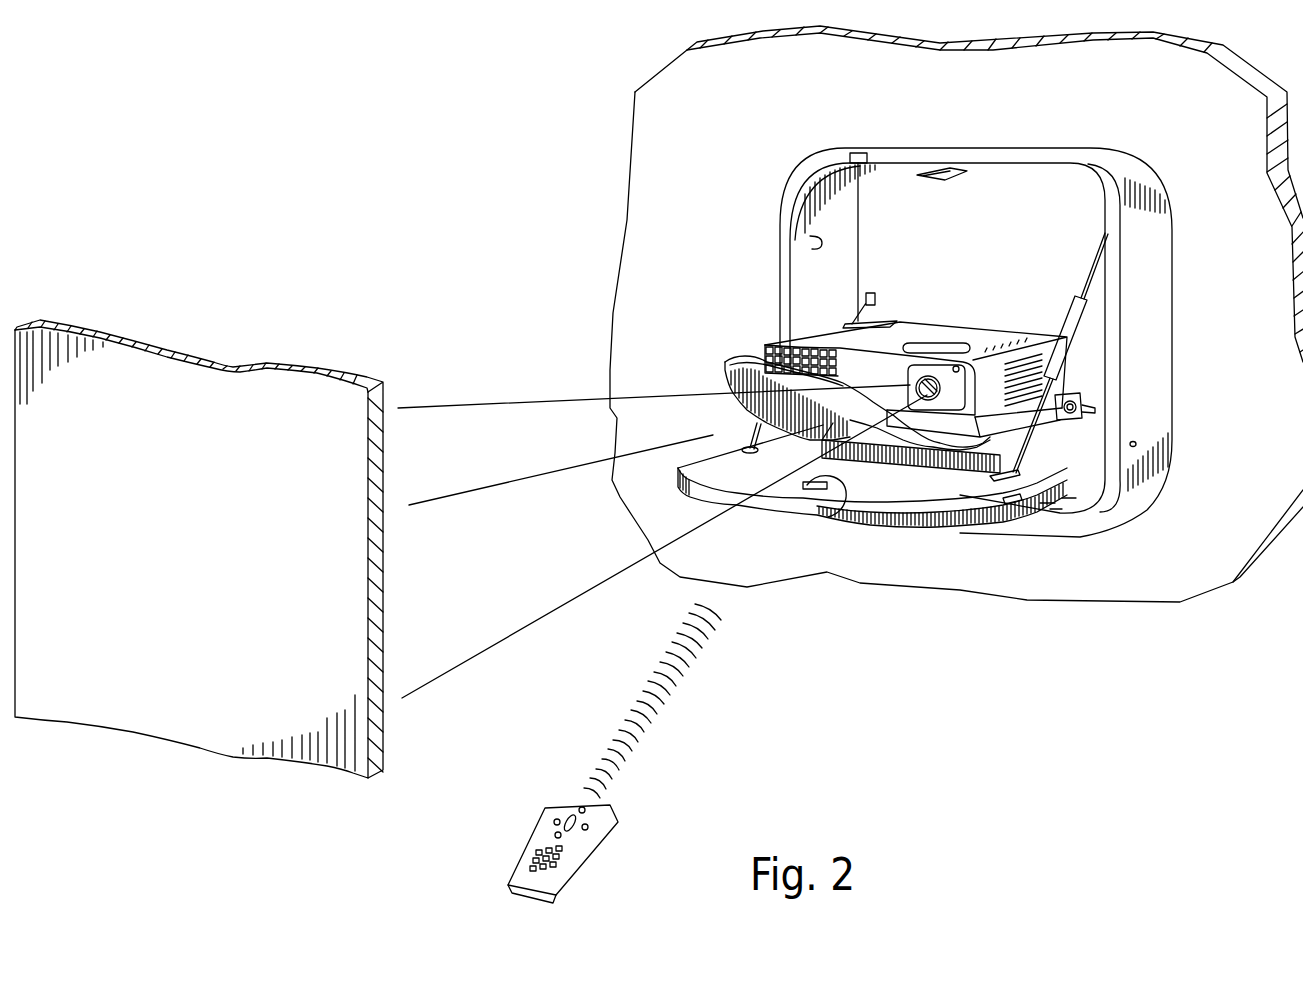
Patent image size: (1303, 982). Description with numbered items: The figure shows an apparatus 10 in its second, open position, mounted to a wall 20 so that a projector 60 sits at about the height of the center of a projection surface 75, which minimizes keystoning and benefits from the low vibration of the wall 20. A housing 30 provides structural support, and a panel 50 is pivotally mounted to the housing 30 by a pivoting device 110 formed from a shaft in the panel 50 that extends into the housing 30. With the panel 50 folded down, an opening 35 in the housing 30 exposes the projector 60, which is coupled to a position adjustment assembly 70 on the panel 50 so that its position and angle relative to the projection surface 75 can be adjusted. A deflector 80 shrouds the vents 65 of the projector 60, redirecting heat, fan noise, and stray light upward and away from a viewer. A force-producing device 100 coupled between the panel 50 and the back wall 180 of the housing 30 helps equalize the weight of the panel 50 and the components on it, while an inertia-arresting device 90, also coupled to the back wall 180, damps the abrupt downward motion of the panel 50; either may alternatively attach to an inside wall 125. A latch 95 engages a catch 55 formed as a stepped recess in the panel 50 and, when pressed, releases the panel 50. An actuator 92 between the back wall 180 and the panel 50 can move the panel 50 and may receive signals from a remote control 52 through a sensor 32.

The apparatus 10 is at (748, 136).
The wall 20 is at (1171, 113).
The housing 30 is at (1158, 291).
The sensor 32 is at (858, 152).
The opening 35 is at (812, 222).
The panel 50 is at (1010, 503).
The remote control 52 is at (546, 830).
The catch 55 is at (848, 485).
The projector 60 is at (940, 333).
The vents 65 is at (775, 350).
The position adjustment assembly 70 is at (890, 482).
The projection surface 75 is at (368, 388).
The deflector 80 is at (745, 357).
The inertia-arresting device 90 is at (1085, 400).
The actuator 92 is at (1075, 300).
The latch 95 is at (933, 170).
The force-producing device 100 is at (866, 300).
The pivoting device 110 is at (1135, 443).
The inside wall 125 is at (811, 244).
The back wall 180 is at (1020, 221).